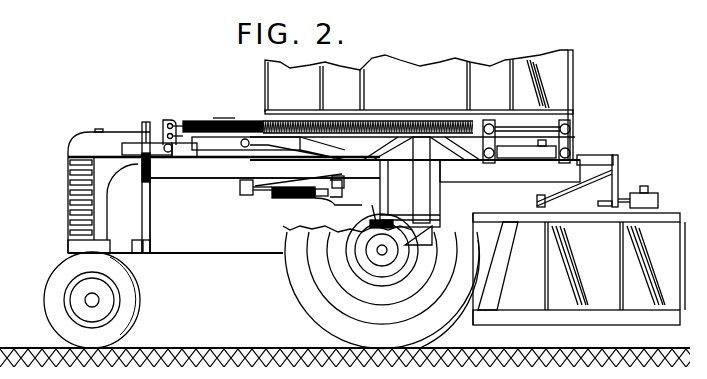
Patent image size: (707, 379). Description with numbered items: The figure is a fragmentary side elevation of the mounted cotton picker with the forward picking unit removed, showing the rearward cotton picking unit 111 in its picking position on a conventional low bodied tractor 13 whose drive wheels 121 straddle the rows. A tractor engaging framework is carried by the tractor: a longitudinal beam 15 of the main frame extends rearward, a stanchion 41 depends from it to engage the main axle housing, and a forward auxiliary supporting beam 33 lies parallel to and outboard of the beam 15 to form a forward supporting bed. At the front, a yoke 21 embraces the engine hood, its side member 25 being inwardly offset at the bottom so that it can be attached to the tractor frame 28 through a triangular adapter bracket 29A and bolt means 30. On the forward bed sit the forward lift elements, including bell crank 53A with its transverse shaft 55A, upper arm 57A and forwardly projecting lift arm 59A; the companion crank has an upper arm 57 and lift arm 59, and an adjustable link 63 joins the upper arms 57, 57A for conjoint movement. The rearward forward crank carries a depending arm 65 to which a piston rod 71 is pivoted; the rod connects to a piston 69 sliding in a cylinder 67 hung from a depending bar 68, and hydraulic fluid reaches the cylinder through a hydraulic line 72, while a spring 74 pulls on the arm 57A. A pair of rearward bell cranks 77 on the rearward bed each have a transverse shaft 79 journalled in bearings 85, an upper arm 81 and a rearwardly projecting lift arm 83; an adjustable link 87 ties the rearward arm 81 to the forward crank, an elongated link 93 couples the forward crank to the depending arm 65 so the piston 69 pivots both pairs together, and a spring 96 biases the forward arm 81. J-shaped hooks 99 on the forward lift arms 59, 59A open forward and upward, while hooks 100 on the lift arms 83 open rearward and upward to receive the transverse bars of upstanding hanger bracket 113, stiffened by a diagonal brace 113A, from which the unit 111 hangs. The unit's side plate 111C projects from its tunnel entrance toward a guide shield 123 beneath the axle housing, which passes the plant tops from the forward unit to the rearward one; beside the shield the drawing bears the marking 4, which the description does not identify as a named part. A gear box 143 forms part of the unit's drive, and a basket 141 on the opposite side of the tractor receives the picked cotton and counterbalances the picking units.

The tractor 13 is at (65, 131).
The longitudinal beam 15 is at (510, 179).
The yoke 21 is at (158, 202).
The side member 25 is at (142, 204).
The frame 28 is at (224, 249).
The adapter bracket 29A is at (135, 253).
The bolt means 30 is at (132, 252).
The forward auxiliary supporting beam 33 is at (212, 180).
The stanchion 41 is at (388, 197).
The drive shaft 4,5 4 is at (376, 216).
The bell crank 53A is at (170, 118).
The transverse shaft 55A is at (175, 158).
The upper arm 57 is at (255, 146).
The upper arm 57A is at (208, 121).
The lift arm 59 is at (226, 150).
The lift arm 59A is at (136, 146).
The adjustable link 63 is at (213, 118).
The depending arm 65 is at (240, 186).
The cylinder 67 is at (334, 180).
The depending bar 68 is at (342, 187).
The piston 69 is at (290, 198).
The piston rod 71 is at (260, 191).
The hydraulic line 72 is at (348, 206).
The spring 74 is at (225, 121).
The bell crank 77 is at (589, 142).
The transverse shaft 79 is at (478, 162).
The upper arm 81 is at (494, 130).
The lift arm 83 is at (538, 88).
The bearing 85 is at (491, 159).
The adjustable link 87 is at (520, 134).
The elongated link 93 is at (292, 181).
The spring 96 is at (372, 139).
The J-shaped hook 99 is at (122, 150).
The J-shaped hook 100 is at (618, 161).
The rearward cotton picking unit 111 is at (580, 263).
The side plate 111C is at (430, 236).
The hanger bracket 113 is at (530, 195).
The diagonal brace 113A is at (598, 203).
The drive wheel 121 is at (440, 305).
The guide shield 123 is at (392, 228).
The basket 141 is at (573, 66).
The gear box 143 is at (652, 198).